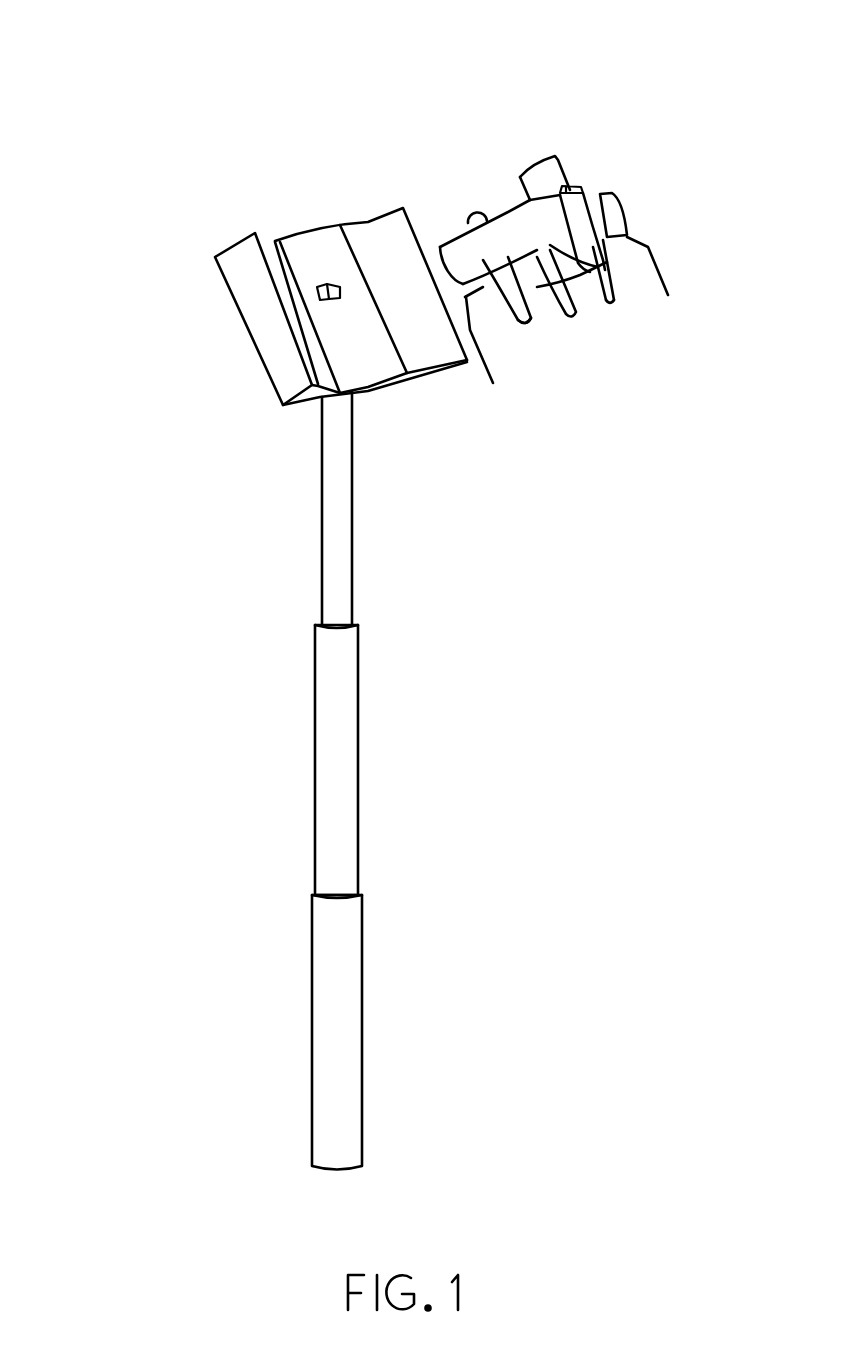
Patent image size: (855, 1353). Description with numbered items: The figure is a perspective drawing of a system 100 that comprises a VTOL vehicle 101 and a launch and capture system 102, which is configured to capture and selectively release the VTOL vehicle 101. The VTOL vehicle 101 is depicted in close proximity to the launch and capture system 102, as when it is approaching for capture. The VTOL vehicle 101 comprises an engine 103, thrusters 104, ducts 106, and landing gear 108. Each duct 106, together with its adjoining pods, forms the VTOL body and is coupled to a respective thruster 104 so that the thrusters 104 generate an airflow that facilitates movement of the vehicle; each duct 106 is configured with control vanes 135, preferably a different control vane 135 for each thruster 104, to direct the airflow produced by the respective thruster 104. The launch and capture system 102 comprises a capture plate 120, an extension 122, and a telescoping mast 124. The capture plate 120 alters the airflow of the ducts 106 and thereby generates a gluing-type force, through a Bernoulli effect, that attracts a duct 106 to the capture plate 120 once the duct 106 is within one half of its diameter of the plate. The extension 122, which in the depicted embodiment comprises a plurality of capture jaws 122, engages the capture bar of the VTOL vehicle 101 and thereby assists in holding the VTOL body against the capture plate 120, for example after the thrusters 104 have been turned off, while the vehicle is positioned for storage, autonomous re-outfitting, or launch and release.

The system 100 is at (705, 76).
The VTOL vehicle 101 is at (521, 376).
The launch and capture system 102 is at (166, 271).
The engine 103 is at (592, 172).
The thrusters 104 is at (472, 212).
The ducts 106 is at (503, 226).
The landing gear 108 is at (673, 272).
The capture plate 120 is at (273, 372).
The extension (capture jaws) 122 is at (333, 280).
The telescoping mast 124 is at (362, 810).
The control vanes 135 is at (532, 321).